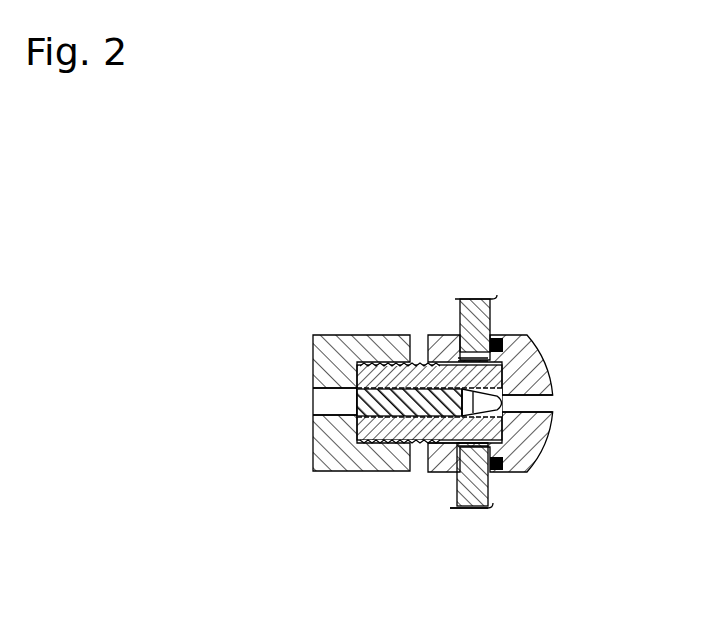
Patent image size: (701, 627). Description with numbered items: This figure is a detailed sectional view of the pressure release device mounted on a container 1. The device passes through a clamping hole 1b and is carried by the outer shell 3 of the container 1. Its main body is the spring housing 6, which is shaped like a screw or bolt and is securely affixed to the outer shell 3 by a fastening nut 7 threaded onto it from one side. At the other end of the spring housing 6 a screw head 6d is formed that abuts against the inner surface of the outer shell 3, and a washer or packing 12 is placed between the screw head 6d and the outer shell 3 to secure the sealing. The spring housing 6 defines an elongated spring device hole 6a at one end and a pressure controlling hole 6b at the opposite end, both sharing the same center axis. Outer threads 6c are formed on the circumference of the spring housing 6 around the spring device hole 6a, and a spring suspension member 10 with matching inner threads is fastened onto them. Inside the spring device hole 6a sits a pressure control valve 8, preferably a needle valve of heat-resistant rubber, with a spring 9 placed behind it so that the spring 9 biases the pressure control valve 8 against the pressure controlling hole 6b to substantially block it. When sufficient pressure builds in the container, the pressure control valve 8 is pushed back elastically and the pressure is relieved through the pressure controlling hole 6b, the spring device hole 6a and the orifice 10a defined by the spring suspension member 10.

The container 1 is at (455, 508).
The clamping hole 1b is at (475, 297).
The outer shell 3 is at (427, 290).
The spring housing 6 is at (443, 456).
The spring device hole 6a is at (360, 405).
The pressure controlling hole 6b is at (552, 404).
The threads 6c is at (372, 440).
The screw head 6d is at (520, 473).
The fastening nut 7 is at (443, 335).
The pressure control valve 8 is at (432, 473).
The spring 9 is at (363, 430).
The spring suspension member 10 is at (333, 335).
The orifice 10a is at (323, 403).
The washer or packing 12 is at (493, 473).